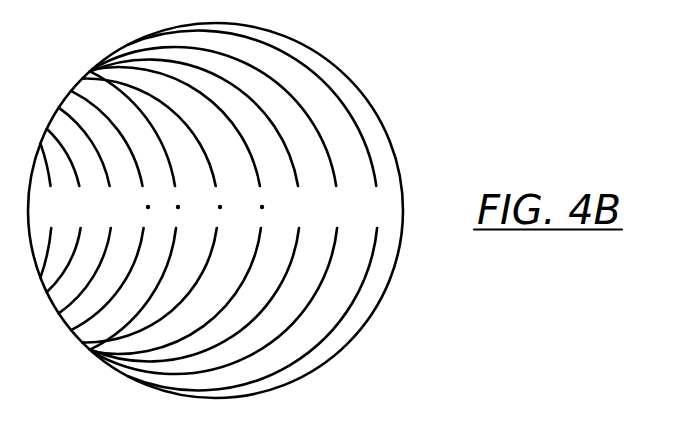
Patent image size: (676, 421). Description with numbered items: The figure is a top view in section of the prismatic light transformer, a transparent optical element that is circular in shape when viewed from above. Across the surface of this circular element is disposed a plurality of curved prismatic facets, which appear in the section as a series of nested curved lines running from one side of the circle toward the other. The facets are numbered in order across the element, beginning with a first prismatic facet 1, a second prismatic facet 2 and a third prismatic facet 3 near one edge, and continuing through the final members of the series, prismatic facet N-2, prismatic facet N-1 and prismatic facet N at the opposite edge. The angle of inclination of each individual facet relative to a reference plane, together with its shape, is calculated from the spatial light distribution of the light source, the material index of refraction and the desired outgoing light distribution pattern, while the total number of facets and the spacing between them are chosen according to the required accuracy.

The prismatic facet 1 is at (47, 210).
The prismatic facet 2 is at (67, 210).
The prismatic facet 3 is at (89, 211).
The prismatic facet N-2 is at (203, 211).
The prismatic facet N-1 is at (225, 210).
The prismatic facet N is at (258, 211).